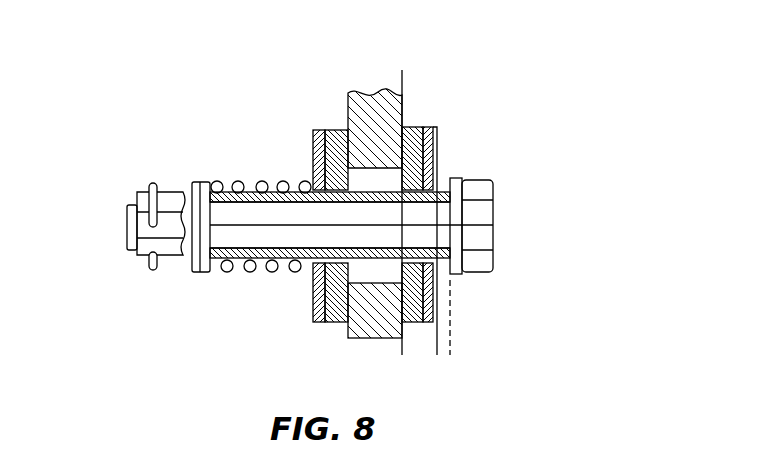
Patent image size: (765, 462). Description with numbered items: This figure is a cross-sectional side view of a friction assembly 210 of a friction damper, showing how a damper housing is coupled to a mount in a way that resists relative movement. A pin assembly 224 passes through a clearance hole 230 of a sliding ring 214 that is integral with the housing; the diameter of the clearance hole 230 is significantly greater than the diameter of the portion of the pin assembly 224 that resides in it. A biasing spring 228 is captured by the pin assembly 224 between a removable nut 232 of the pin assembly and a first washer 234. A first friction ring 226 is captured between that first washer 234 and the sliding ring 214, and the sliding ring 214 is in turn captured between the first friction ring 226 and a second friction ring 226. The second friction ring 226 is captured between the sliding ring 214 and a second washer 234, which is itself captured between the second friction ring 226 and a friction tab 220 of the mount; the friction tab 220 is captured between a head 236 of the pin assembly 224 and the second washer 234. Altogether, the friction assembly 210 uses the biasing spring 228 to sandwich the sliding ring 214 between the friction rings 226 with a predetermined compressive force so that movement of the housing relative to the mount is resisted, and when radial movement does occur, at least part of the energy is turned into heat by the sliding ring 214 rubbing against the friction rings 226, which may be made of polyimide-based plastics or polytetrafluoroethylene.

The friction assembly 210 is at (260, 96).
The sliding ring 214 is at (360, 122).
The friction tab 220 is at (445, 340).
The pin assembly 224 is at (430, 194).
The friction ring 226 is at (350, 168).
The biasing spring 228 is at (262, 276).
The clearance hole 230 is at (377, 269).
The removable nut 232 is at (197, 180).
The washer 234 is at (314, 168).
The head 236 is at (487, 217).